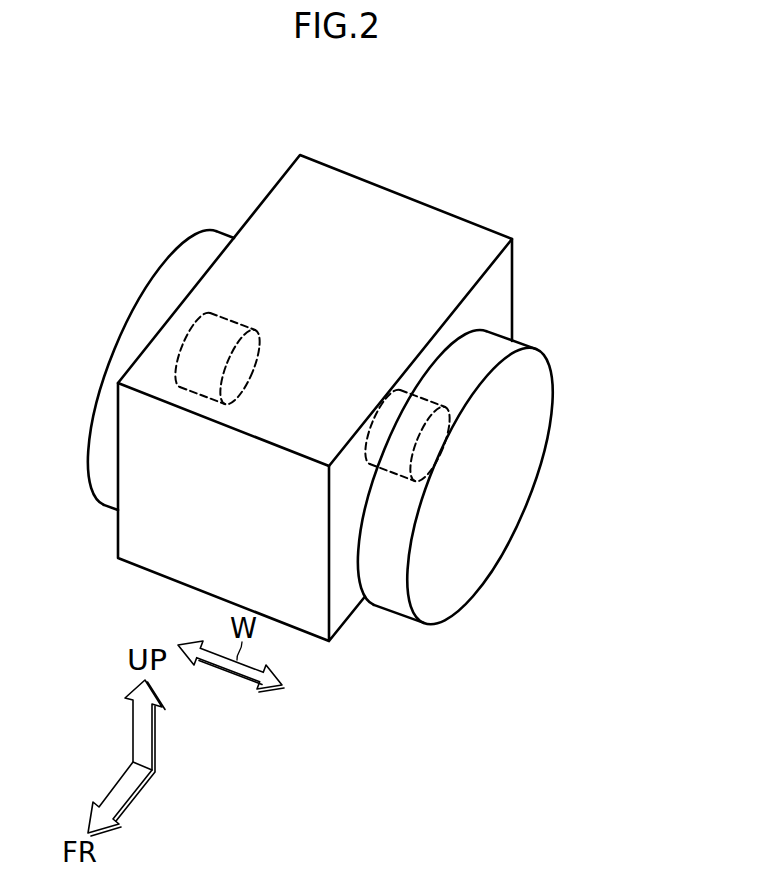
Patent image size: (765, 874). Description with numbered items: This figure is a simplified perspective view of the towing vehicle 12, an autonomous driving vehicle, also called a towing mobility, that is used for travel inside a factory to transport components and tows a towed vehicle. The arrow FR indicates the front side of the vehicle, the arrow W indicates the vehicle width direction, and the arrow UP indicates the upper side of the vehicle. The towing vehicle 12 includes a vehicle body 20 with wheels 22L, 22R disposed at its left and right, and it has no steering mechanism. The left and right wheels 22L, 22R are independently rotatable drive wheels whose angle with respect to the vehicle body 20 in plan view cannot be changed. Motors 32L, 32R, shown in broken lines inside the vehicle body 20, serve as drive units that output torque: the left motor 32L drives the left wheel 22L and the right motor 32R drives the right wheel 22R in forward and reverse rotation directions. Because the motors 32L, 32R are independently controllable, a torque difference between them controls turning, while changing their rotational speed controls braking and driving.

The towing vehicle 12 is at (359, 365).
The vehicle body 20 is at (428, 227).
The right wheel 22R is at (167, 284).
The left wheel 22L is at (540, 398).
The right motor 32R is at (232, 322).
The left motor 32L is at (402, 397).